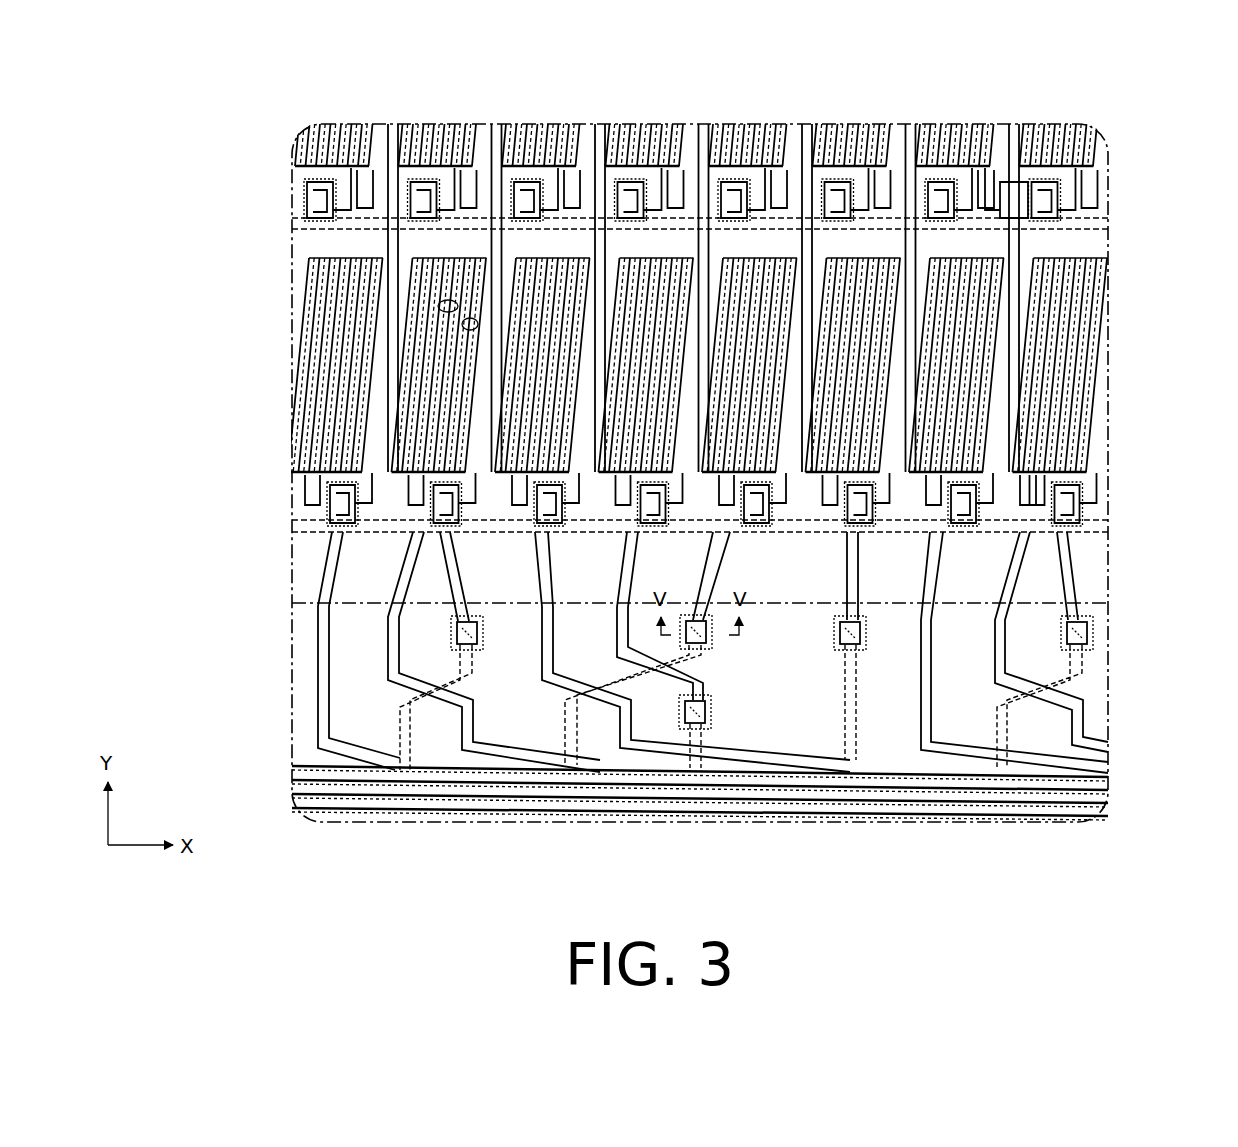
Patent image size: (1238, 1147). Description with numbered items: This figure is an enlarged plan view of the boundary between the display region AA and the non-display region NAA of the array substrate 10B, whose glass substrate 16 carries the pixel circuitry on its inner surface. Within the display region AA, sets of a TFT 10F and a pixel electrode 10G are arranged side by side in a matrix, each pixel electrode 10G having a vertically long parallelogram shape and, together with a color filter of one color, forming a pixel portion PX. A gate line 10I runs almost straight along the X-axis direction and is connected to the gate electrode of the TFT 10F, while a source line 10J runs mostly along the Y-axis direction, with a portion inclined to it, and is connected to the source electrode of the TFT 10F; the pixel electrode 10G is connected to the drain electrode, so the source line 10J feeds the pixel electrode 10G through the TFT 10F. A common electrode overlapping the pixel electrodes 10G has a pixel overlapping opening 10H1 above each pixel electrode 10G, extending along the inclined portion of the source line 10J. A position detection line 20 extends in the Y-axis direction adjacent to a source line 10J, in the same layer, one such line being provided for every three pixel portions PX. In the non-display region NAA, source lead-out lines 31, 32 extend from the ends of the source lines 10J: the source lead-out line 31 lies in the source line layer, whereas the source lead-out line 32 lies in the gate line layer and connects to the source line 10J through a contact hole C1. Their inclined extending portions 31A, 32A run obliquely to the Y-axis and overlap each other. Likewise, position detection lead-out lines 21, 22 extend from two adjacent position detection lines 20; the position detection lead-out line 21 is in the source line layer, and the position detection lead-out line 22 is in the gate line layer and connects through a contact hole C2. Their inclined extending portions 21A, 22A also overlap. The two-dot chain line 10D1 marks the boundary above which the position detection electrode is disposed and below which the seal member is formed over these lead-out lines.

The pixel electrode 10G is at (303, 152).
The TFT 10F is at (466, 241).
The pixel portion PX is at (518, 248).
The source line 10J is at (667, 247).
The position detection line 20 is at (990, 146).
The array substrate 10B is at (1082, 188).
The display region AA is at (1077, 241).
The gate line 10I is at (345, 225).
The pixel overlapping opening 10H1 is at (438, 306).
The two-dot chain line 10D1 is at (1104, 603).
The contact hole C1 is at (480, 633).
The contact hole C2 is at (708, 646).
The non-display region NAA is at (1092, 678).
The position detection lead-out line 21 is at (395, 650).
The glass substrate 16 is at (345, 700).
The source lead-out line 31 is at (345, 748).
The source lead-out line 32 is at (410, 738).
The inclined extending portion 31A is at (446, 772).
The inclined extending portion 32A is at (478, 774).
The position detection lead-out line 22 is at (585, 786).
The inclined extending portion 21A is at (620, 762).
The inclined extending portion 22A is at (660, 792).